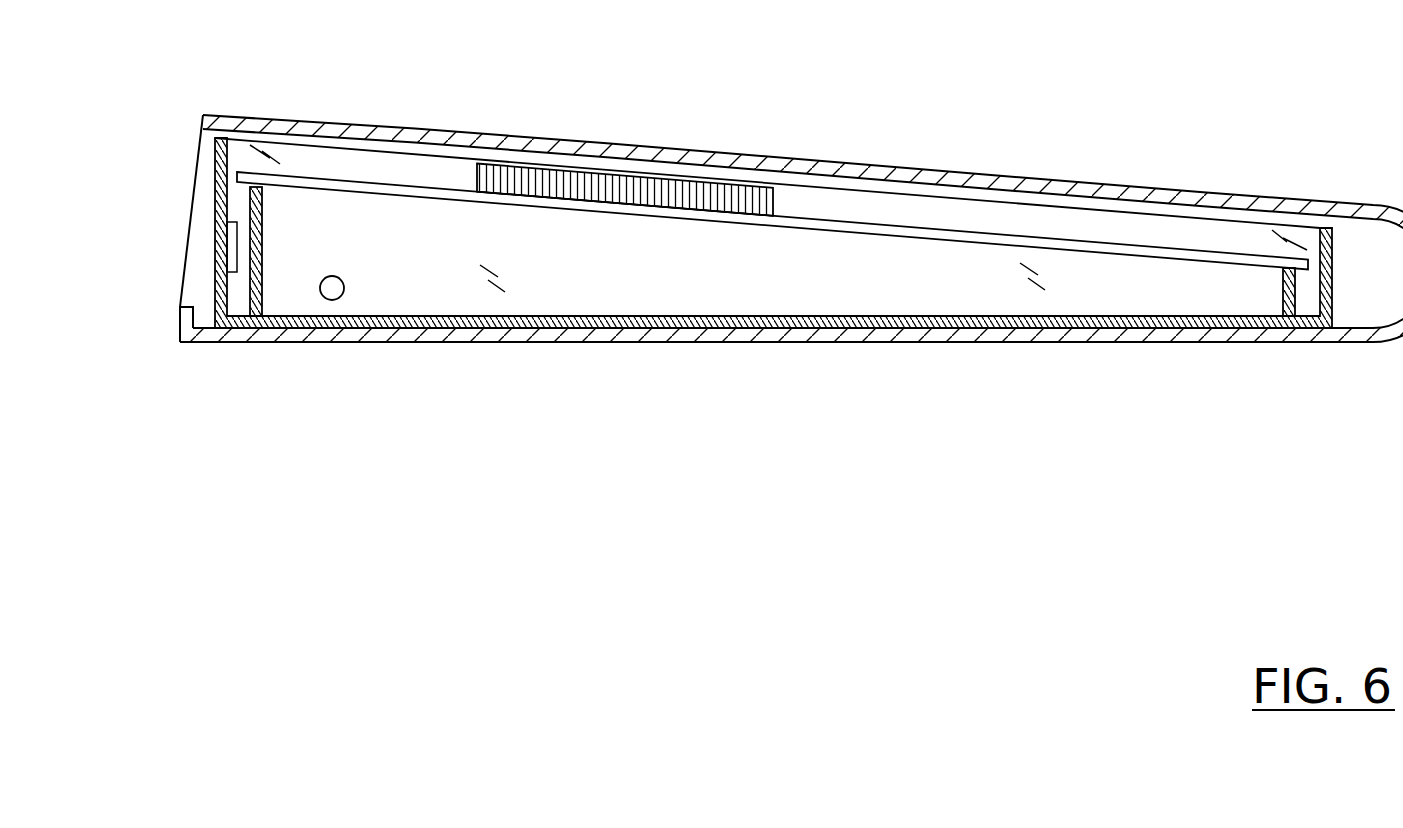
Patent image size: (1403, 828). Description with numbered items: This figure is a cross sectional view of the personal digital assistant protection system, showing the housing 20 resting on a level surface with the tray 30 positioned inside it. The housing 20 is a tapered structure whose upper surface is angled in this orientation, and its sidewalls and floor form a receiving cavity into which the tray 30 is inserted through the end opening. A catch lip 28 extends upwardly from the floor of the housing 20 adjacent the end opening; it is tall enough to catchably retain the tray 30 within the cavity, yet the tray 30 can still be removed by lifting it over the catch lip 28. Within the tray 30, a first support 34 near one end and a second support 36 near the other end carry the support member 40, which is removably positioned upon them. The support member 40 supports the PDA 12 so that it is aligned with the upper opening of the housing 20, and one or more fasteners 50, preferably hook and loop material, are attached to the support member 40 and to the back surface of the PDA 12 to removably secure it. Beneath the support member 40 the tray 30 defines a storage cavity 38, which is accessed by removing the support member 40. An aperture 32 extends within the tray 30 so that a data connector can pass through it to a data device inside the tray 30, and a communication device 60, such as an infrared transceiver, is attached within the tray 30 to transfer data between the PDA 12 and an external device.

The PDA 12 is at (660, 180).
The housing 20 is at (944, 166).
The catch lip 28 is at (180, 312).
The tray 30 is at (887, 338).
The aperture 32 is at (333, 290).
The first support 34 is at (1282, 302).
The second support 36 is at (262, 287).
The storage cavity 38 is at (618, 291).
The support member 40 is at (1022, 240).
The fasteners 50 is at (707, 208).
The communication device 60 is at (232, 237).